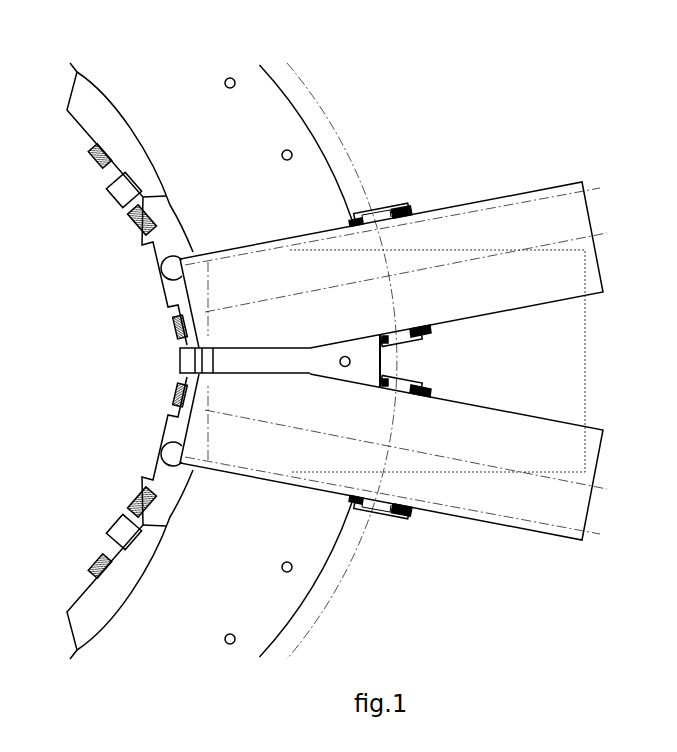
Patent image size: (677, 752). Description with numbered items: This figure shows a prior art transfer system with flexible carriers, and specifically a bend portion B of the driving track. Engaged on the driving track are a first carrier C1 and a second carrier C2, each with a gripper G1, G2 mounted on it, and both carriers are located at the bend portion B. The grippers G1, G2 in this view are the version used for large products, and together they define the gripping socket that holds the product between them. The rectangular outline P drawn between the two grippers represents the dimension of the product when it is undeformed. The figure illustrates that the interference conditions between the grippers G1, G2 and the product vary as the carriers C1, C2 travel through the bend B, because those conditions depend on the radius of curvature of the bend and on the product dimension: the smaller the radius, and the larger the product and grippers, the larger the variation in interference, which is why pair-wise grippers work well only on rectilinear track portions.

The bend portion B is at (202, 117).
The gripper G1 is at (568, 216).
The gripper G2 is at (573, 521).
The first carrier C1 is at (389, 201).
The second carrier C2 is at (389, 521).
The rectangular outline P is at (588, 393).